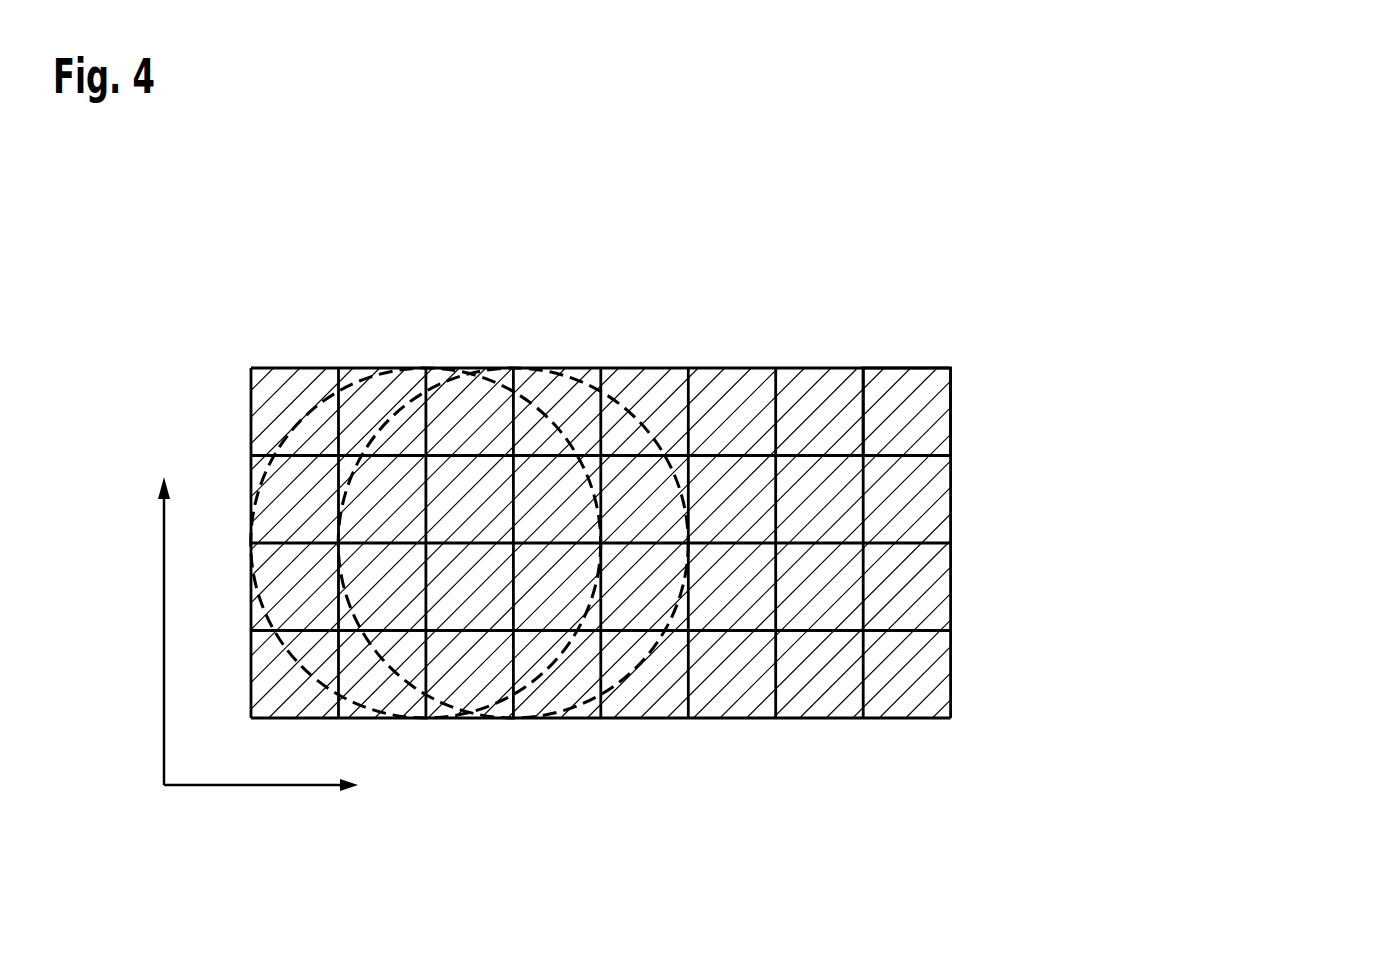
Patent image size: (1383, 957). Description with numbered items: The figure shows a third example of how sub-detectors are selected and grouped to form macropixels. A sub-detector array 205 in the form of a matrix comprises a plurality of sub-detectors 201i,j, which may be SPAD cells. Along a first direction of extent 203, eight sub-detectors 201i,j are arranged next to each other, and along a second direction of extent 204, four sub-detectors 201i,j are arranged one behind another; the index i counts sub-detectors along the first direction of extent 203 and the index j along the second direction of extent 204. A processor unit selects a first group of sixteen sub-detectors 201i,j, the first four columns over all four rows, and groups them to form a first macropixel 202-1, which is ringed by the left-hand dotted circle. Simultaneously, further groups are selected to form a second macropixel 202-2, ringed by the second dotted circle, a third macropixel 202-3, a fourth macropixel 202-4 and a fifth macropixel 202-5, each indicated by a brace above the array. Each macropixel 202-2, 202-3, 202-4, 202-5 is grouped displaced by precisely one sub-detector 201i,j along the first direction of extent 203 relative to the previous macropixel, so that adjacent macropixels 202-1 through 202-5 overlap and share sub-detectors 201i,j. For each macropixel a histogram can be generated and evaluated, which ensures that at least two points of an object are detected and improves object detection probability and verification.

The sub-detector 201i,j is at (922, 396).
The first macropixel 202-1 is at (600, 358).
The second macropixel 202-2 is at (687, 283).
The third macropixel 202-3 is at (775, 207).
The fourth macropixel 202-4 is at (863, 132).
The fifth macropixel 202-5 is at (950, 358).
The first direction of extent 203 is at (313, 786).
The second direction of extent 204 is at (164, 548).
The sub-detector array 205 is at (1250, 132).